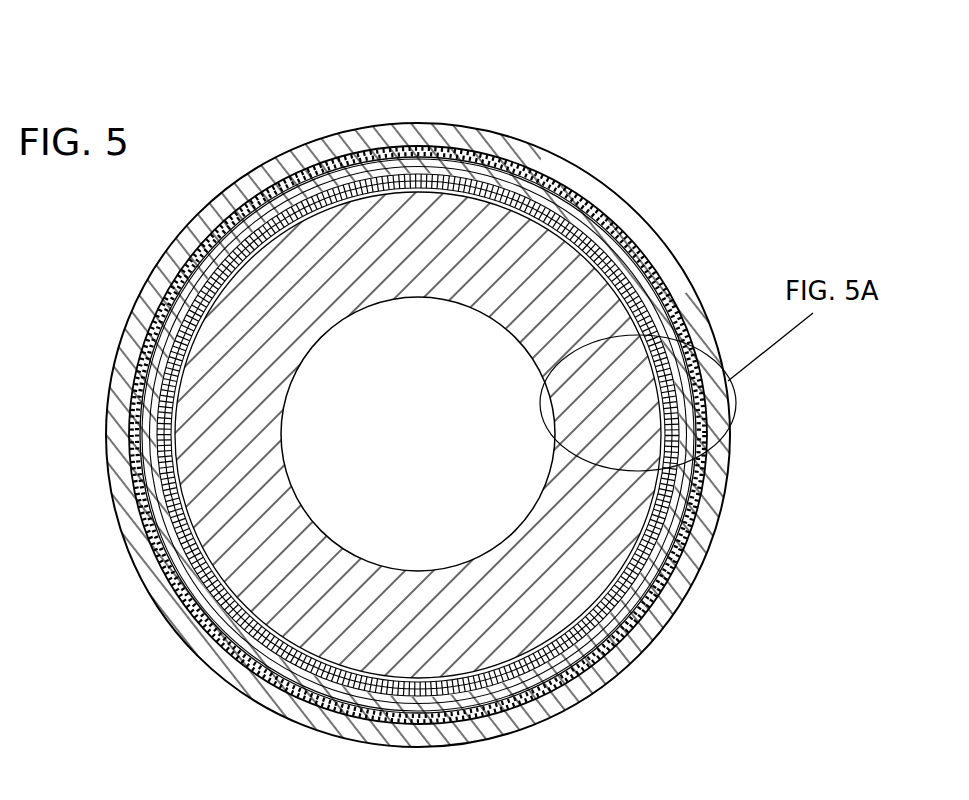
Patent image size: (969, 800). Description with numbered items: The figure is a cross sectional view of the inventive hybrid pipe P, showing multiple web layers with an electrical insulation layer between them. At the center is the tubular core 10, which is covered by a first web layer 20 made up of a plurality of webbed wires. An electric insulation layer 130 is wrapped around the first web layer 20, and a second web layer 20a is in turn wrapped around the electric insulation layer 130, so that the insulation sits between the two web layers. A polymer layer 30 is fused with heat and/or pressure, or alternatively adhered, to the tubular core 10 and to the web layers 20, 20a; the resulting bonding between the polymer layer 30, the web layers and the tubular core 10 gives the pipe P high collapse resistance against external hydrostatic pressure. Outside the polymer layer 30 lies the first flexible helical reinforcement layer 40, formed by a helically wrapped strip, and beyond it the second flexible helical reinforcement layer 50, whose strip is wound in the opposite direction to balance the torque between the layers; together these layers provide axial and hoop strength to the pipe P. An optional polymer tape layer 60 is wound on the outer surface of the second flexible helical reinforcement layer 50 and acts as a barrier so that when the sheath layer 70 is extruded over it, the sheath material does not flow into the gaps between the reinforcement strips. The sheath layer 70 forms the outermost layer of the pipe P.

The tubular core 10 is at (320, 243).
The first web layer 20 is at (350, 187).
The second web layer 20a is at (443, 163).
The polymer layer 30 is at (490, 163).
The first flexible helical reinforcement layer 40 is at (535, 173).
The second flexible helical reinforcement layer 50 is at (578, 188).
The polymer tape layer 60 is at (620, 225).
The sheath layer 70 is at (648, 252).
The electric insulation layer 130 is at (388, 173).
The hybrid pipe P is at (128, 642).